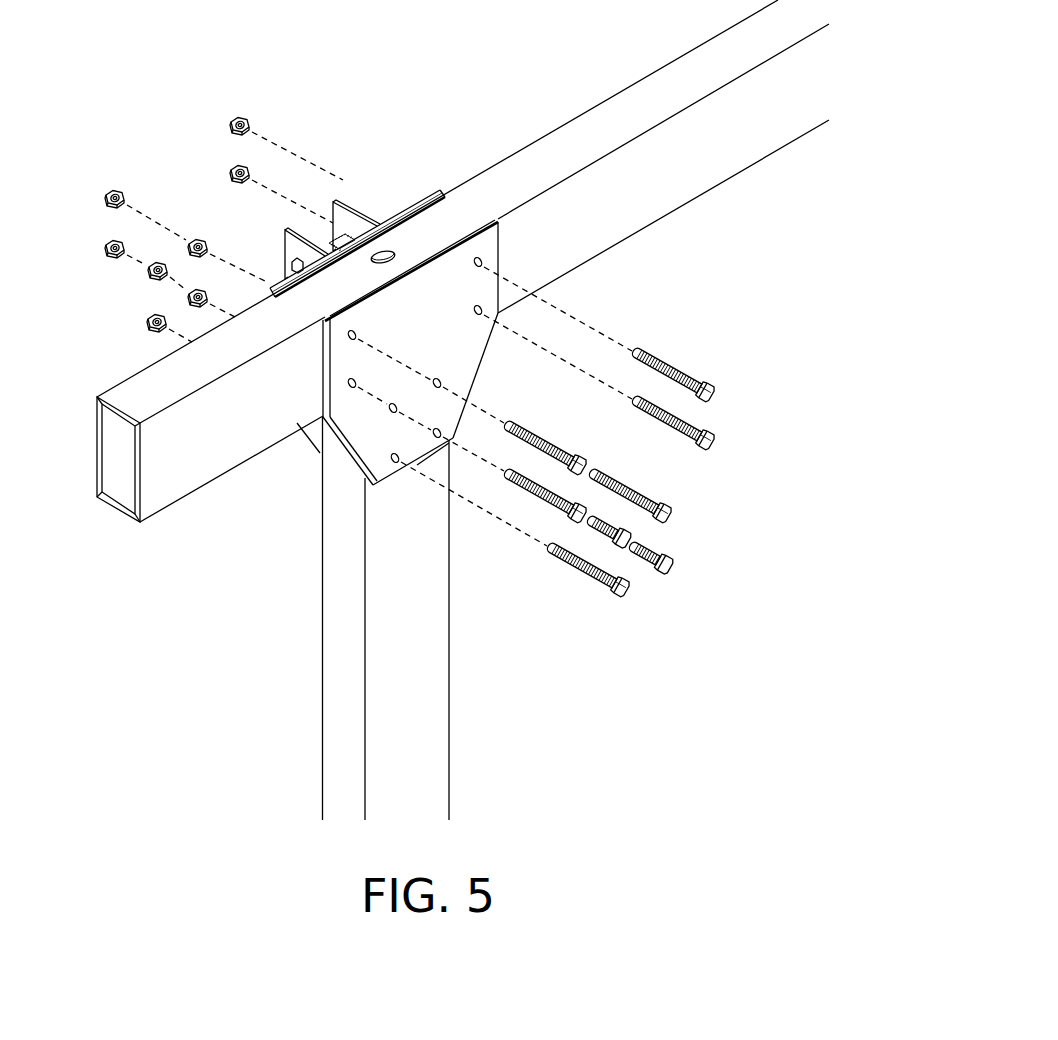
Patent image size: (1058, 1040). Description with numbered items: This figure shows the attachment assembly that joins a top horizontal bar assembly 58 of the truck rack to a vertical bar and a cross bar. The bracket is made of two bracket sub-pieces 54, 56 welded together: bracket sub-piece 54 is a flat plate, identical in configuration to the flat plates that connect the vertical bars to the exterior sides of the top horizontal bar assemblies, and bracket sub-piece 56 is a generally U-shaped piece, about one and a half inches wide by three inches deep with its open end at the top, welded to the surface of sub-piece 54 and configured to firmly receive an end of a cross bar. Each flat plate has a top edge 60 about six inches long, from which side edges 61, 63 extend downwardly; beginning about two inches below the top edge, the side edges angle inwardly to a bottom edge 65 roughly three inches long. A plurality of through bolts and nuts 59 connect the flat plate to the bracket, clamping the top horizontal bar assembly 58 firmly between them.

The bracket sub-piece 54 is at (415, 198).
The bracket sub-piece 56 is at (332, 190).
The beam 58 is at (682, 170).
The through bolts and nuts 59 is at (262, 92).
The top edge 60 is at (455, 243).
The side edge 61 is at (500, 252).
The side edge 63 is at (320, 377).
The bottom edge 65 is at (445, 465).